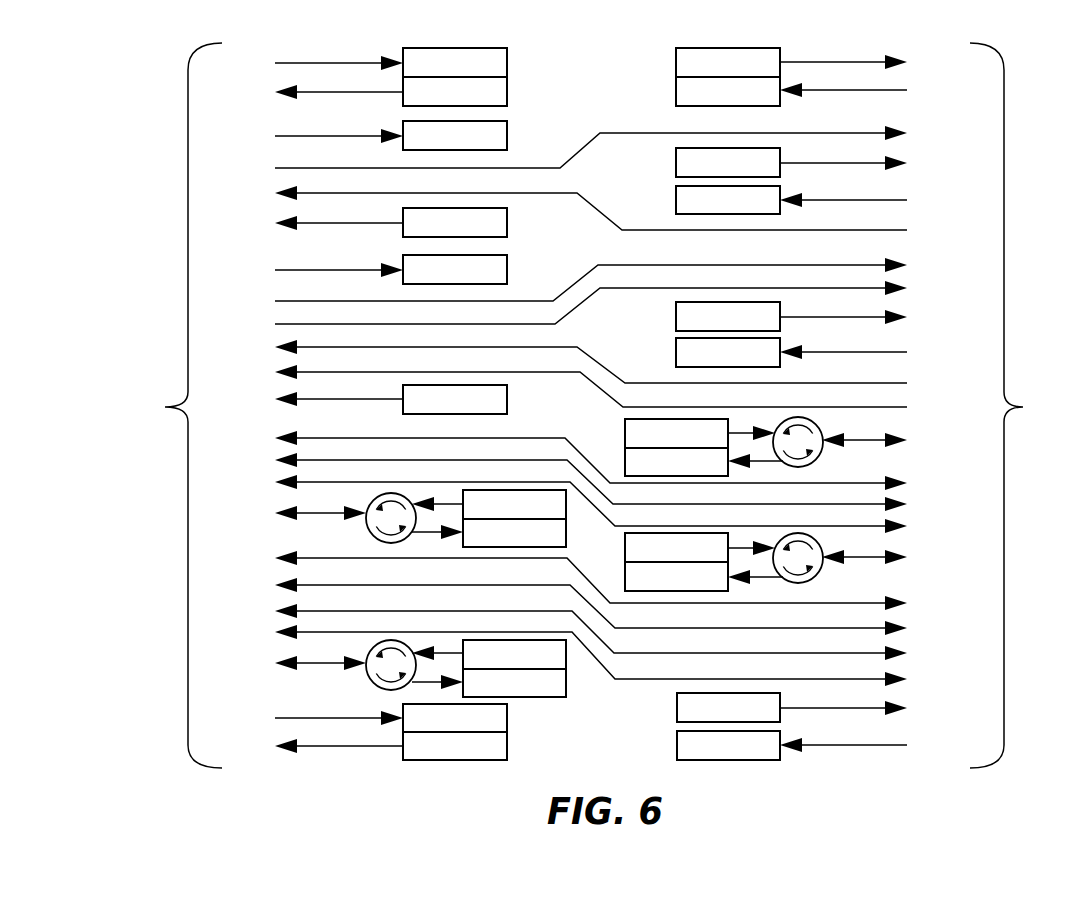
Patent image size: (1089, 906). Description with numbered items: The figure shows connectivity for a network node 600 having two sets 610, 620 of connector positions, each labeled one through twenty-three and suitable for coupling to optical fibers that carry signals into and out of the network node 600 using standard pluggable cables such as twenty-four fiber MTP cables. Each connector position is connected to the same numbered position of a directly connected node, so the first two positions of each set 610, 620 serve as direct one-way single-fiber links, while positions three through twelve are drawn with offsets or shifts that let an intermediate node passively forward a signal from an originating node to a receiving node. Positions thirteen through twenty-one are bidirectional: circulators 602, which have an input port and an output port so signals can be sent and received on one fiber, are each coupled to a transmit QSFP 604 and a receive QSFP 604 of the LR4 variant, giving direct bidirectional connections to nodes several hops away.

The network node 600 is at (577, 48).
The circulator 602 is at (818, 459).
The QSFP 604 is at (507, 62).
The set of connector positions 610 is at (172, 405).
The set of connector positions 620 is at (1018, 405).